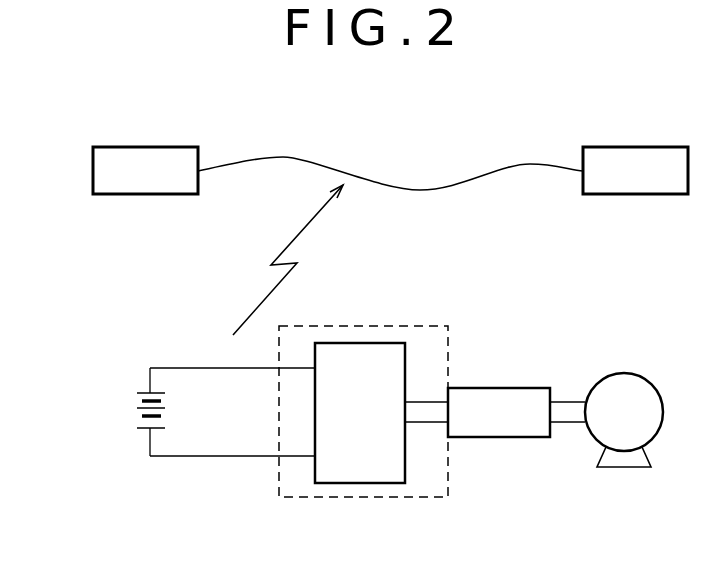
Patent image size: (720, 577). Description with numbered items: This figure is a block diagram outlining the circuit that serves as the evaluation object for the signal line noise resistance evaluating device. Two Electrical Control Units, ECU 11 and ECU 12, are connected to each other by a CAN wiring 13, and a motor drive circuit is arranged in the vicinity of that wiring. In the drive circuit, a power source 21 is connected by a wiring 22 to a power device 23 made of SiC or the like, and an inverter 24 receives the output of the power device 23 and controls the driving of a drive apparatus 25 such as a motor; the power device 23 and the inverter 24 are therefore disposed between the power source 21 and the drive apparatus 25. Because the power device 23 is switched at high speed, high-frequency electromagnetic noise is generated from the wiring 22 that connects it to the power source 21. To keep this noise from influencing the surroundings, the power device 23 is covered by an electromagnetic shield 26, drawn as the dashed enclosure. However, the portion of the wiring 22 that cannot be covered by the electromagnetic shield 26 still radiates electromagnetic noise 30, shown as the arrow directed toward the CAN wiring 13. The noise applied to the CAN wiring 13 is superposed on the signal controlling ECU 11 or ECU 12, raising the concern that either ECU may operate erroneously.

The ECU 11 is at (146, 146).
The ECU 12 is at (644, 146).
The CAN wiring 13 is at (283, 157).
The electromagnetic noise 30 is at (270, 293).
The power source 21 is at (128, 434).
The wiring 22 is at (216, 458).
The power device 23 is at (345, 485).
The inverter 24 is at (500, 440).
The drive apparatus 25 is at (622, 470).
The electromagnetic shield 26 is at (425, 498).